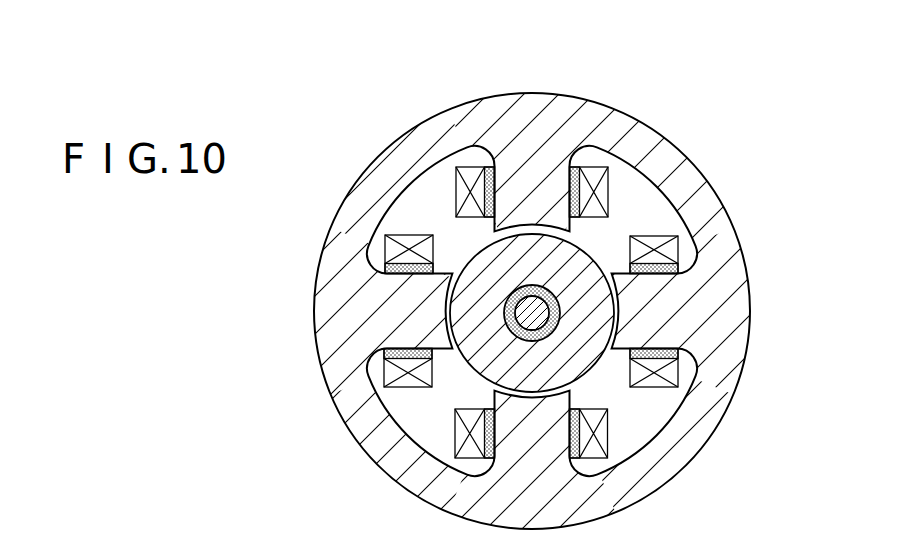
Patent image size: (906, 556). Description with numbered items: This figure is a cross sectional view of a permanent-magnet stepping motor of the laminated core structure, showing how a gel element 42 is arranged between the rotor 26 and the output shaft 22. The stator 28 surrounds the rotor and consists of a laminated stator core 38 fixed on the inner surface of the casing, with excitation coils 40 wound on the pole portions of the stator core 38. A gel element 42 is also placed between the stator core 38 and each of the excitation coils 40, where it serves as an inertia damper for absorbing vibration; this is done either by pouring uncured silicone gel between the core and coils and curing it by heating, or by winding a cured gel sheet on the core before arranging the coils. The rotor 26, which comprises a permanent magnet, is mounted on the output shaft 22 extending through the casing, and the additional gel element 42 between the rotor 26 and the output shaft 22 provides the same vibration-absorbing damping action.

The stator 28 is at (711, 104).
The stator core 38 is at (358, 313).
The rotor 26 is at (542, 274).
The output shaft 22 is at (526, 316).
The gel element 42 is at (576, 214).
The excitation coils 40 is at (400, 237).